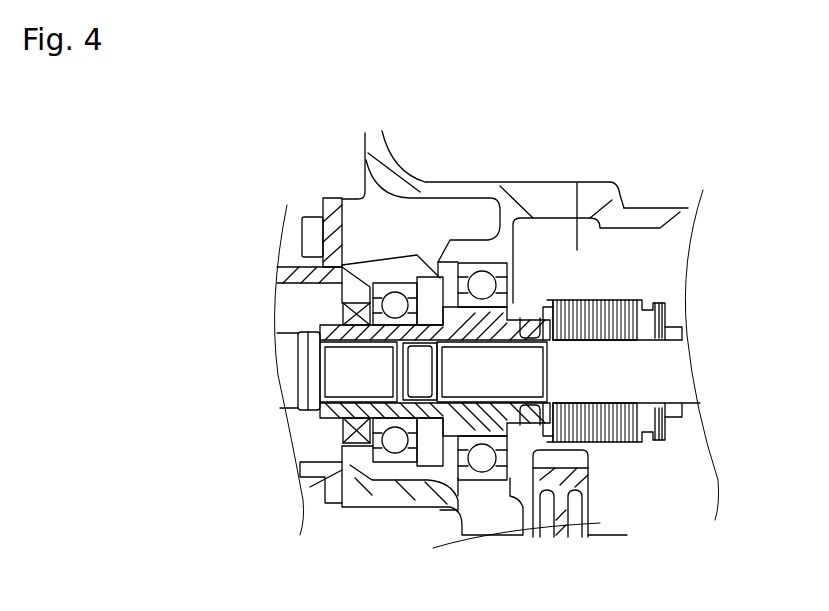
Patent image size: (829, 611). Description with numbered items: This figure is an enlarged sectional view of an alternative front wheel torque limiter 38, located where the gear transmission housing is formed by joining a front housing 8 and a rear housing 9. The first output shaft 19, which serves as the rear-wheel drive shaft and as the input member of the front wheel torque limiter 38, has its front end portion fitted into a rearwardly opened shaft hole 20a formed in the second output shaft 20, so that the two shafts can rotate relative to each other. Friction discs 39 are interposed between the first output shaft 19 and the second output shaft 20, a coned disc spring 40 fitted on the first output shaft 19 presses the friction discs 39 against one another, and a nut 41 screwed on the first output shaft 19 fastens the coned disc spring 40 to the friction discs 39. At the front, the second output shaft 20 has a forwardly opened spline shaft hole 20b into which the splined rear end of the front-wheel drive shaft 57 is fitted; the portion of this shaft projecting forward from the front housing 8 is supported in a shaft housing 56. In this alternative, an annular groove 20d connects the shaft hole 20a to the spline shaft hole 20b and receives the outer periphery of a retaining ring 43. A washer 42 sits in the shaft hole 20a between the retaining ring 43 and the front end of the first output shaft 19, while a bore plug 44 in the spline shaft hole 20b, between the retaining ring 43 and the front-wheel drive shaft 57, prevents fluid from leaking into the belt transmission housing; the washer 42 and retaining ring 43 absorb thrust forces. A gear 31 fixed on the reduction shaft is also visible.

The front housing 8 is at (500, 183).
The rear housing 9 is at (650, 208).
The first output shaft 19 is at (682, 372).
The second output shaft 20 is at (528, 297).
The shaft hole 20a is at (477, 533).
The spline shaft hole 20b is at (338, 413).
The annular groove 20d is at (440, 273).
The gear 31 is at (588, 482).
The front wheel torque limiter 38 is at (687, 453).
The friction discs 39 is at (597, 297).
The coned disc spring 40 is at (668, 308).
The nut 41 is at (680, 327).
The washer 42 is at (433, 343).
The retaining ring 43 is at (403, 403).
The bore plug 44 is at (403, 373).
The shaft housing 56 is at (332, 197).
The front-wheel drive shaft 57 is at (285, 372).